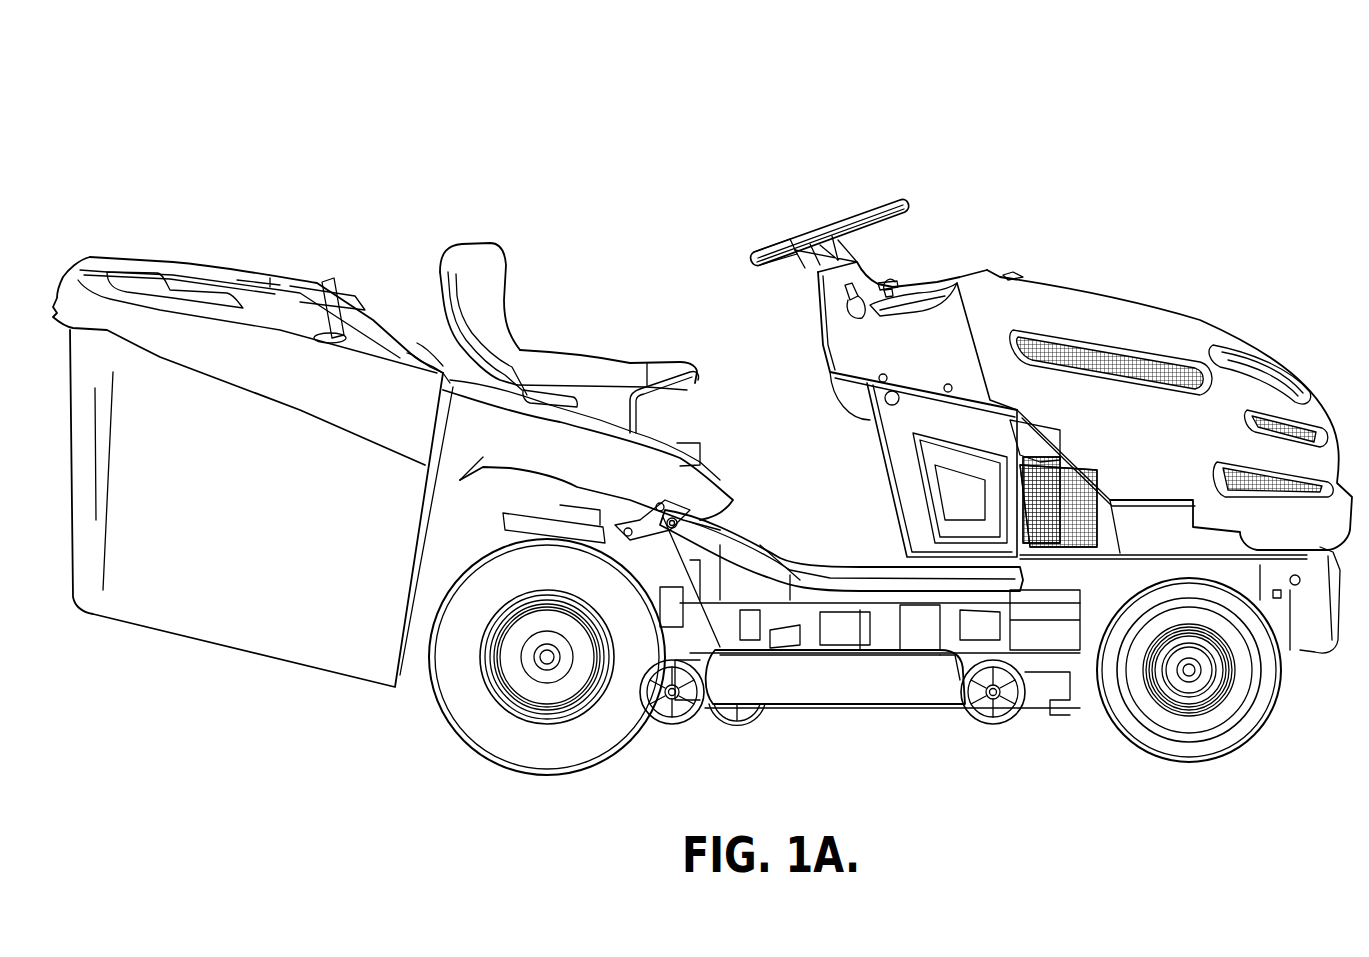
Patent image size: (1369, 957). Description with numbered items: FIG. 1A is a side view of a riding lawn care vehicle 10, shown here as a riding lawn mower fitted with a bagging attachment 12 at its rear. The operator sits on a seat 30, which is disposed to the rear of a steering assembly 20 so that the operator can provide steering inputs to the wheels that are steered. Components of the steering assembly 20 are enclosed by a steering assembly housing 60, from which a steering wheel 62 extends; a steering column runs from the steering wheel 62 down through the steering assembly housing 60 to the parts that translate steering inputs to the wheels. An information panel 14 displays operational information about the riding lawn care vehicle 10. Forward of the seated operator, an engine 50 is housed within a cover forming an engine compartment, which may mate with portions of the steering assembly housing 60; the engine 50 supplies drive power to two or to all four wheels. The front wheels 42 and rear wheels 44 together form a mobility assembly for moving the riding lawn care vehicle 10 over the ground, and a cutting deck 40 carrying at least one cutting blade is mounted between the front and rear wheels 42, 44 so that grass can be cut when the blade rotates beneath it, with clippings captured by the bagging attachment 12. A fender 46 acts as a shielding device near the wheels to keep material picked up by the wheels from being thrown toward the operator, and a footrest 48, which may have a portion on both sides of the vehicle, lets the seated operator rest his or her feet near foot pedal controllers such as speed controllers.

The riding lawn care vehicle 10 is at (1144, 148).
The bagging attachment 12 is at (173, 250).
The information panel 14 is at (887, 278).
The steering assembly 20 is at (836, 207).
The seat 30 is at (478, 267).
The cutting deck 40 is at (866, 688).
The front wheels 42 is at (1235, 720).
The rear wheels 44 is at (594, 742).
The fender 46 is at (430, 353).
The footrest 48 is at (873, 567).
The engine 50 is at (1220, 318).
The steering assembly housing 60 is at (805, 331).
The steering wheel 62 is at (767, 247).